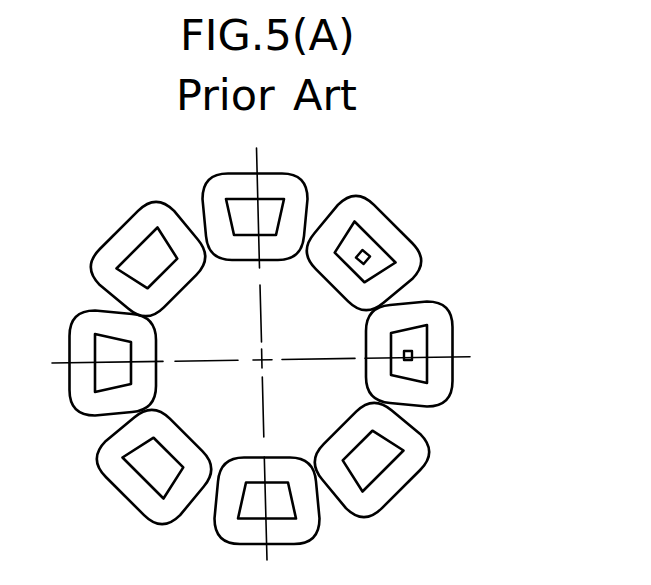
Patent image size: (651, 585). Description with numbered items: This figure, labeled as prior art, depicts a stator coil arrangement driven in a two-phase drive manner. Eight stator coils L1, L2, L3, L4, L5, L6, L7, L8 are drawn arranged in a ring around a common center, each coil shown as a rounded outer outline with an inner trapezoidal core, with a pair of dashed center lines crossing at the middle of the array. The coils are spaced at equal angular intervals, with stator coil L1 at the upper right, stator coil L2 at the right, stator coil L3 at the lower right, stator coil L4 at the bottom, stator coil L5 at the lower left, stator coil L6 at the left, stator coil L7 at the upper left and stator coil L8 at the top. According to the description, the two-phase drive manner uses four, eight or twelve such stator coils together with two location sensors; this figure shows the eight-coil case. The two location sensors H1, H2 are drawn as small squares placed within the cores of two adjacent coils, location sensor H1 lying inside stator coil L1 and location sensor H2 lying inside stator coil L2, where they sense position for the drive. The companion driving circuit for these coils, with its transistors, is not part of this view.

The stator coil L1 is at (365, 254).
The stator coil L2 is at (429, 354).
The stator coil L3 is at (370, 458).
The stator coil L4 is at (267, 519).
The stator coil L5 is at (155, 465).
The stator coil L6 is at (91, 363).
The stator coil L7 is at (149, 260).
The stator coil L8 is at (255, 200).
The location sensor H1 is at (368, 253).
The location sensor H2 is at (409, 360).